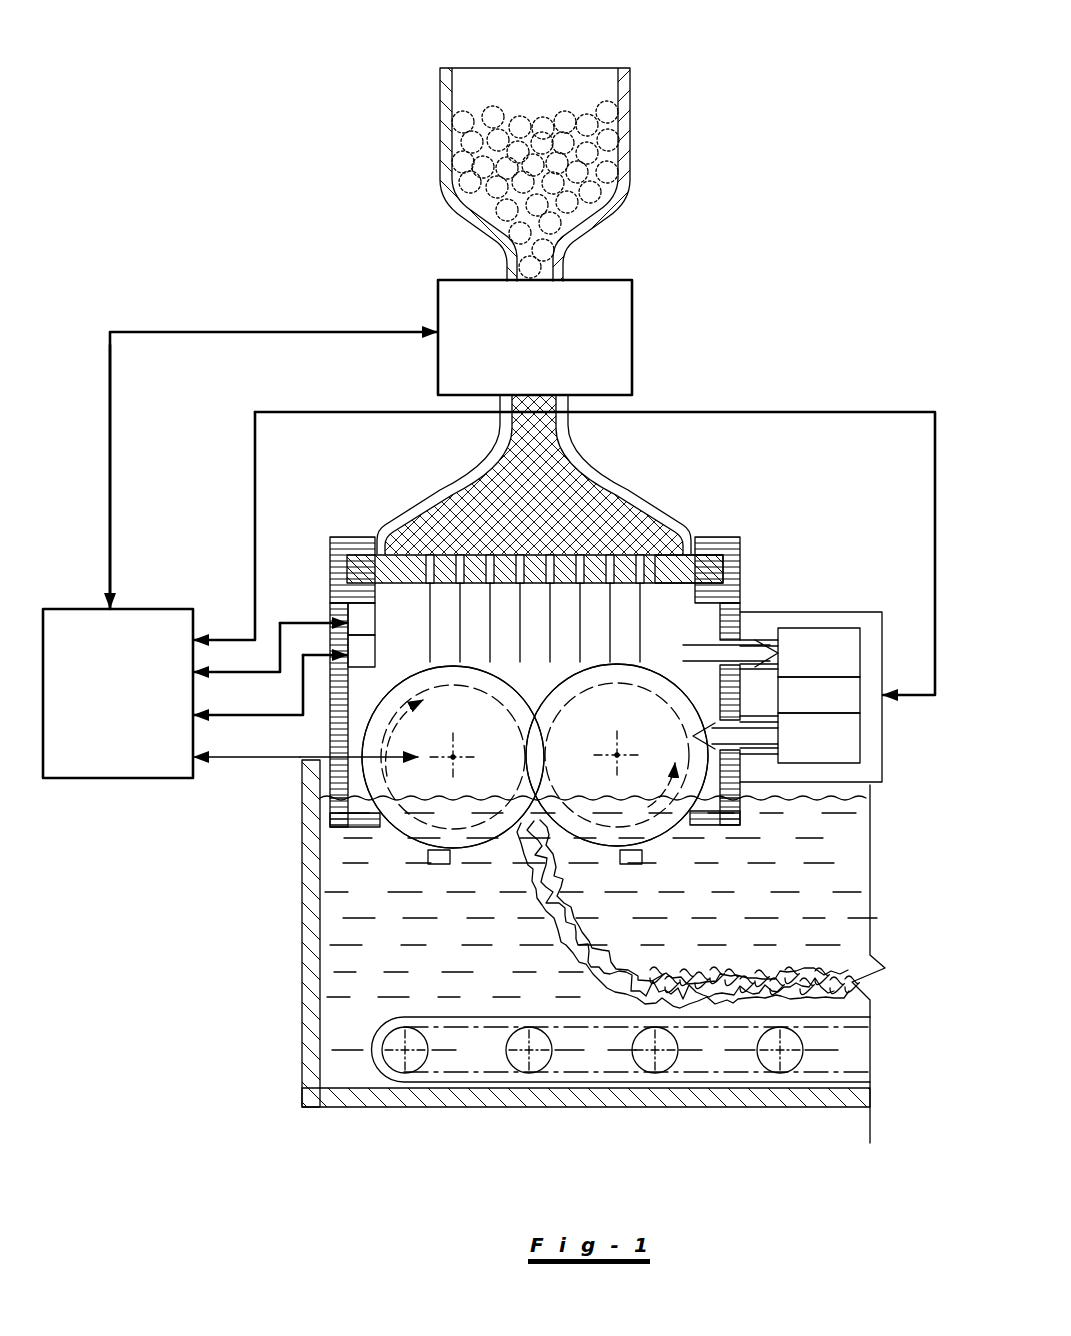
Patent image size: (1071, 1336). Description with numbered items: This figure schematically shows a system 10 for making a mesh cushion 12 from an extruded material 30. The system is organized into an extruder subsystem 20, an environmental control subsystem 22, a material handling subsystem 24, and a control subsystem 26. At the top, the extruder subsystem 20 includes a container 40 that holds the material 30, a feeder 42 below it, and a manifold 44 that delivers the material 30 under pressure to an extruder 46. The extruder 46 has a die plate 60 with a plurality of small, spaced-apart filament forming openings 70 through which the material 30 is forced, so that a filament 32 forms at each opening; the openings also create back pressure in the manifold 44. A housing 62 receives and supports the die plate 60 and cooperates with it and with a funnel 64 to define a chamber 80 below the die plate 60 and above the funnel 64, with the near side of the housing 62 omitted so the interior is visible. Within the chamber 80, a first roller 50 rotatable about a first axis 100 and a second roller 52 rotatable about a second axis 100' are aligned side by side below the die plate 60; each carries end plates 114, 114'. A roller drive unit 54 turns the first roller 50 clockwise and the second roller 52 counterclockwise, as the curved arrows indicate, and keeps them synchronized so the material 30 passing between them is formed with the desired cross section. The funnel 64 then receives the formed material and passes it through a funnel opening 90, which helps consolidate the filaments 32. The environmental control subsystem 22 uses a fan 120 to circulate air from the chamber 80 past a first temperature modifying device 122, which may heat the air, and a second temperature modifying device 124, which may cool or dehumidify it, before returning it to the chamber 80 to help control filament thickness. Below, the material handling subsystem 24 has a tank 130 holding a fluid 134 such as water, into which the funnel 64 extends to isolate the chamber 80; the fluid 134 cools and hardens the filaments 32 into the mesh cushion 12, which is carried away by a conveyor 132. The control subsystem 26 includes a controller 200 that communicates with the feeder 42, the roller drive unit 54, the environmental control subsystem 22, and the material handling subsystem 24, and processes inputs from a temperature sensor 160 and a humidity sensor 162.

The system 10 is at (712, 157).
The mesh cushion 12 is at (858, 978).
The extruder subsystem 20 is at (357, 252).
The environmental control subsystem 22 is at (884, 609).
The material handling subsystem 24 is at (371, 1128).
The control subsystem 26 is at (168, 552).
The material 30 is at (498, 112).
The filaments 32 is at (578, 612).
The container 40 is at (515, 103).
The feeder 42 is at (520, 344).
The manifold 44 is at (617, 473).
The extruder 46 is at (356, 533).
The first roller 50 is at (398, 840).
The second roller 52 is at (655, 835).
The roller drive unit 54 is at (345, 762).
The die plate 60 is at (668, 565).
The housing 62 is at (742, 556).
The funnel 64 is at (392, 838).
The filament forming openings 70 is at (516, 552).
The chamber 80 is at (655, 626).
The funnel opening 90 is at (602, 868).
The first axis 100 is at (487, 743).
The second axis 100' is at (587, 770).
The end plates 114 is at (295, 817).
The end plates 114' is at (773, 814).
The fan 120 is at (803, 664).
The first temperature modifying device 122 is at (803, 704).
The second temperature modifying device 124 is at (803, 746).
The tank 130 is at (302, 960).
The conveyor 132 is at (555, 1105).
The fluid 134 is at (842, 797).
The temperature sensor 160 is at (358, 620).
The humidity sensor 162 is at (358, 658).
The controller 200 is at (96, 704).